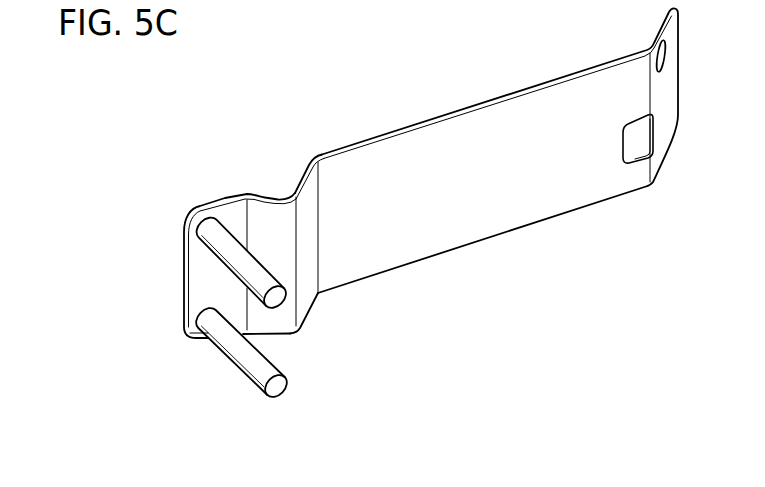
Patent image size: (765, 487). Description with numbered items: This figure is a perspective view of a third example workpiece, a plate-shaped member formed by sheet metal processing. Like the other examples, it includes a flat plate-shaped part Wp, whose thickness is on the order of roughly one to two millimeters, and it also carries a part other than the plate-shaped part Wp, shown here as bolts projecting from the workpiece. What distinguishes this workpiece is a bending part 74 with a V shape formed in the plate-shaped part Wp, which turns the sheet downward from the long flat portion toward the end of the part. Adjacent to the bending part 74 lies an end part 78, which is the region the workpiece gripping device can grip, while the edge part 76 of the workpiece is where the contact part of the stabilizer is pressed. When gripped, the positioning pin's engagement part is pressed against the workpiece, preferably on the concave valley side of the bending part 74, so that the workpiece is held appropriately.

The plate-shaped part Wp is at (535, 112).
The bending part 74 is at (290, 210).
The edge part 76 is at (185, 295).
The end part 78 is at (197, 272).